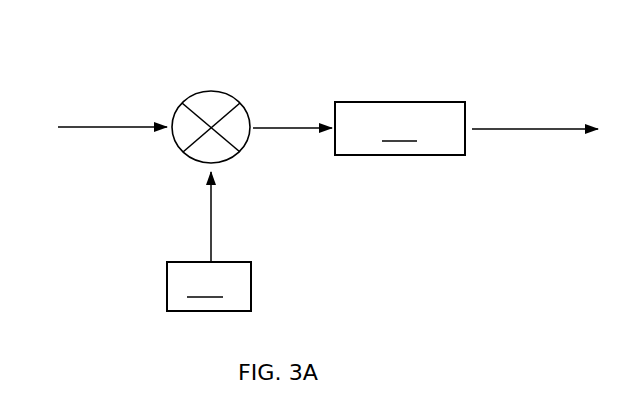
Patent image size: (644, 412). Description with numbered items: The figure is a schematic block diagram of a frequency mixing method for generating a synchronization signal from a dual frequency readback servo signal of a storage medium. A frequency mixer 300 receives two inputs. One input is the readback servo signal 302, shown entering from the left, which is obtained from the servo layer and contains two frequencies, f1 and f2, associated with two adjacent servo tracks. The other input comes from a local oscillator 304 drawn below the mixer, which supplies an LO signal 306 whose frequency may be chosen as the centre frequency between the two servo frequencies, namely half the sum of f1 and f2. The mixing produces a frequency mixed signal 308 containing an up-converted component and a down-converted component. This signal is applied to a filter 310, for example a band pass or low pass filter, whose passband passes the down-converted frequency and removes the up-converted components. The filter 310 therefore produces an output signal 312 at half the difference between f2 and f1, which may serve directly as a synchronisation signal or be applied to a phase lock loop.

The frequency mixer 300 is at (195, 93).
The readback servo signal 302 is at (72, 122).
The local oscillator 304 is at (209, 286).
The LO signal 306 is at (207, 219).
The frequency mixed signal 308 is at (293, 120).
The filter 310 is at (400, 128).
The output signal 312 is at (543, 123).